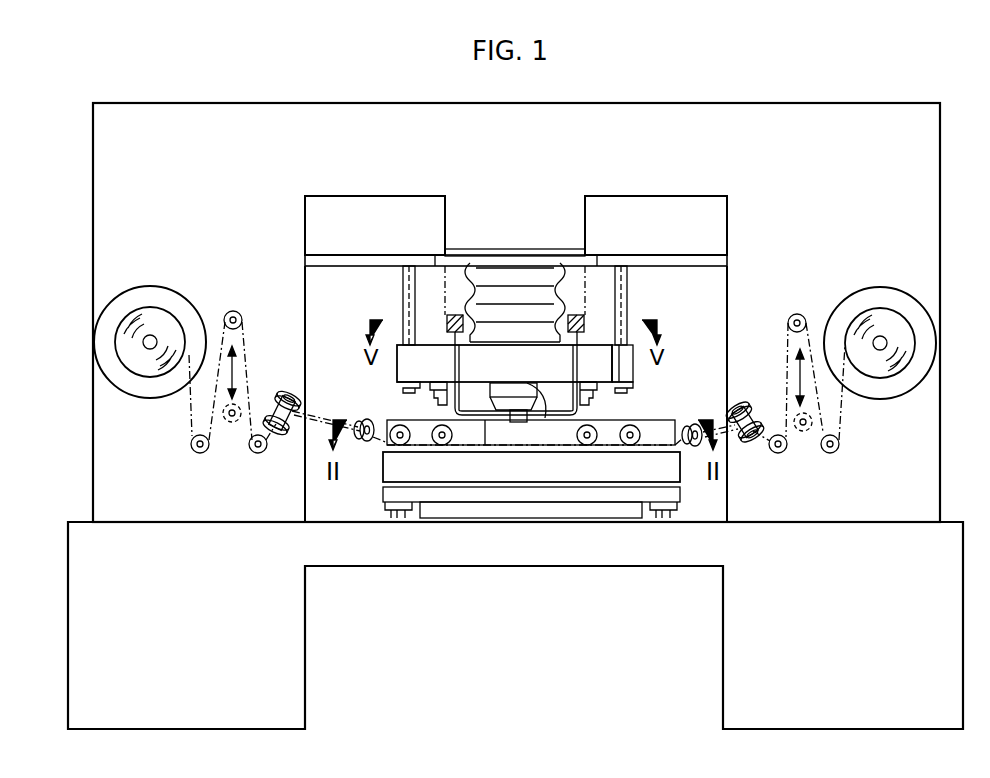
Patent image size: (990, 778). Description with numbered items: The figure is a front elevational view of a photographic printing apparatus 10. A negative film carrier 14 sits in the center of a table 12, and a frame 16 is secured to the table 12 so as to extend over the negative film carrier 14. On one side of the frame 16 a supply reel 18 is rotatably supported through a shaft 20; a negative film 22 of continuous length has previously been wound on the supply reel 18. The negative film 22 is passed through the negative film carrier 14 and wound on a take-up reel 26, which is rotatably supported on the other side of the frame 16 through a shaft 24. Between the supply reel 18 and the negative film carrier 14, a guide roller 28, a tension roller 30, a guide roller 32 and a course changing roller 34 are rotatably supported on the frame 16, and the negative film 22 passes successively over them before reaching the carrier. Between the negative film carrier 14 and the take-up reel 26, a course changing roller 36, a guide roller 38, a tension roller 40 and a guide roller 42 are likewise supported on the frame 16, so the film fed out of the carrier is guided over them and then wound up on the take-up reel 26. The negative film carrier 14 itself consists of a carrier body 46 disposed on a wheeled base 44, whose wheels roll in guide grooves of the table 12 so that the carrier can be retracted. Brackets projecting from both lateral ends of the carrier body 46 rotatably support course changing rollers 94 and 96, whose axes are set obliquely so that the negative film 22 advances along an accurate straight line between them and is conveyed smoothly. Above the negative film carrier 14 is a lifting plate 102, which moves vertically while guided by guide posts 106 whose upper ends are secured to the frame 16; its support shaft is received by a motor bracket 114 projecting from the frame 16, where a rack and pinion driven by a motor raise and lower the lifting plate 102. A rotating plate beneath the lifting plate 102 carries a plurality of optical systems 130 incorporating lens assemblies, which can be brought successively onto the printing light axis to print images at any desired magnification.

The photographic printing apparatus 10 is at (862, 60).
The table 12 is at (850, 520).
The negative film carrier 14 is at (681, 399).
The frame 16 is at (780, 108).
The supply reel 18 is at (163, 287).
The shaft 20 is at (157, 340).
The negative film 22 is at (142, 318).
The shaft 24 is at (888, 343).
The take-up reel 26 is at (136, 388).
The guide roller 28 is at (194, 450).
The tension roller 30 is at (240, 312).
The guide roller 32 is at (262, 452).
The course changing roller 34 is at (282, 395).
The course changing roller 36 is at (747, 402).
The guide roller 38 is at (770, 450).
The tension roller 40 is at (789, 318).
The guide roller 42 is at (840, 445).
The wheeled base 44 is at (680, 496).
The carrier body 46 is at (672, 452).
The course changing roller 94 is at (364, 421).
The course changing roller 96 is at (693, 426).
The lifting plate 102 is at (632, 372).
The guide posts 106 is at (403, 288).
The motor bracket 114 is at (660, 255).
The optical systems 130 is at (430, 398).